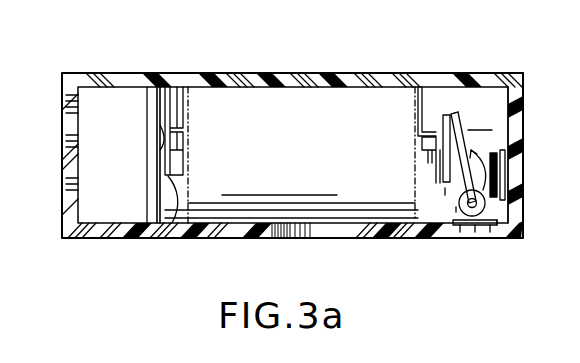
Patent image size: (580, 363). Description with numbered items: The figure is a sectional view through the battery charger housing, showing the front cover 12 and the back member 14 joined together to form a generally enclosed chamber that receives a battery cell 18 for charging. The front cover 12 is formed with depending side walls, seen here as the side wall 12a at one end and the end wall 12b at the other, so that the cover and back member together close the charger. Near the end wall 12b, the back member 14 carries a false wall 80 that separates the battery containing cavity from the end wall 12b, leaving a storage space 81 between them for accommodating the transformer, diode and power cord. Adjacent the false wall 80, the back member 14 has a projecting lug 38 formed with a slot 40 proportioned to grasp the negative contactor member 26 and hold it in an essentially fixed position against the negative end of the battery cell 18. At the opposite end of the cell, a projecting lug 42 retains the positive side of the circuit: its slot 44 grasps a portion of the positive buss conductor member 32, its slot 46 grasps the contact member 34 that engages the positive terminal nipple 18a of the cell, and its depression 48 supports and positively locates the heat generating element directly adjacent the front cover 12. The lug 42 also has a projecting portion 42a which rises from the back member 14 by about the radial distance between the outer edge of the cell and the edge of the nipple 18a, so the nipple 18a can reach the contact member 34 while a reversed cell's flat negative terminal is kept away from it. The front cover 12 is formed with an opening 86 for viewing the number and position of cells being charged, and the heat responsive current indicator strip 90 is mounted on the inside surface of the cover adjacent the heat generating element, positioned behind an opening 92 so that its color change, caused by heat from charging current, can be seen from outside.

The front cover 12 is at (210, 230).
The side wall 12a is at (514, 121).
The end wall 12b is at (66, 148).
The back member 14 is at (375, 79).
The battery cell 18 is at (256, 121).
The positive terminal nipple 18a is at (422, 150).
The negative contactor member 26 is at (172, 226).
The positive buss conductor member 32 is at (503, 160).
The contact member 34 is at (452, 113).
The lug 38 is at (177, 98).
The slot 40 is at (160, 150).
The lug 42 is at (468, 155).
The projecting portion 42a is at (430, 101).
The slot 44 is at (500, 208).
The slot 46 is at (445, 190).
The depression 48 is at (456, 208).
The false wall 80 is at (150, 97).
The storage space 81 is at (107, 107).
The opening 86 is at (283, 230).
The heat responsive current indicator 90 is at (485, 238).
The opening 92 is at (462, 228).